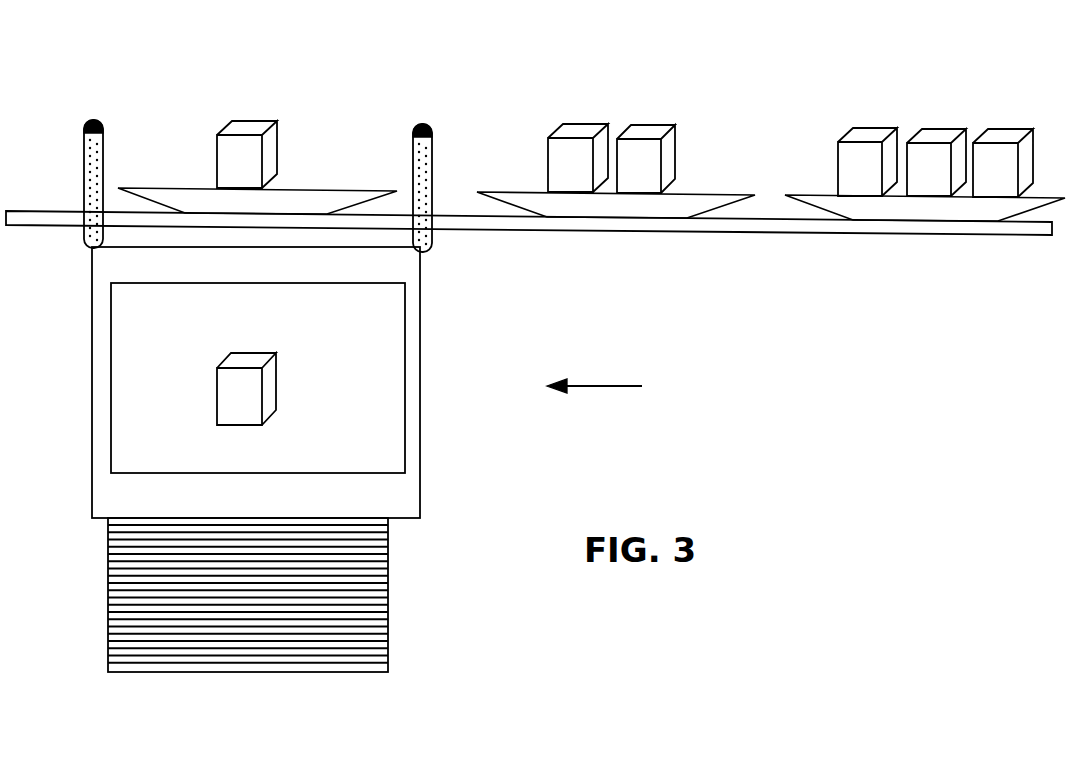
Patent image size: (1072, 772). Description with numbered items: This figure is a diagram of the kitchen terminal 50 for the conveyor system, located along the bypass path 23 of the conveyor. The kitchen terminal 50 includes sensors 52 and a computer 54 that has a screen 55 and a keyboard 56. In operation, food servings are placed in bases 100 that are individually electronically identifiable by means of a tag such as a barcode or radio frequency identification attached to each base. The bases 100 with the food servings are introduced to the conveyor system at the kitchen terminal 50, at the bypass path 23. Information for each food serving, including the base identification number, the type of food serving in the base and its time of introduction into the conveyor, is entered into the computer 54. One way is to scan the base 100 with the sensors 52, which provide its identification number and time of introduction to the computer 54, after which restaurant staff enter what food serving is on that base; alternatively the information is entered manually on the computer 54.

The bypass path 23 is at (813, 228).
The kitchen terminal 50 is at (614, 387).
The sensors 52 is at (100, 120).
The computer 54 is at (423, 368).
The screen 55 is at (308, 438).
The keyboard 56 is at (387, 607).
The bases 100 is at (548, 212).